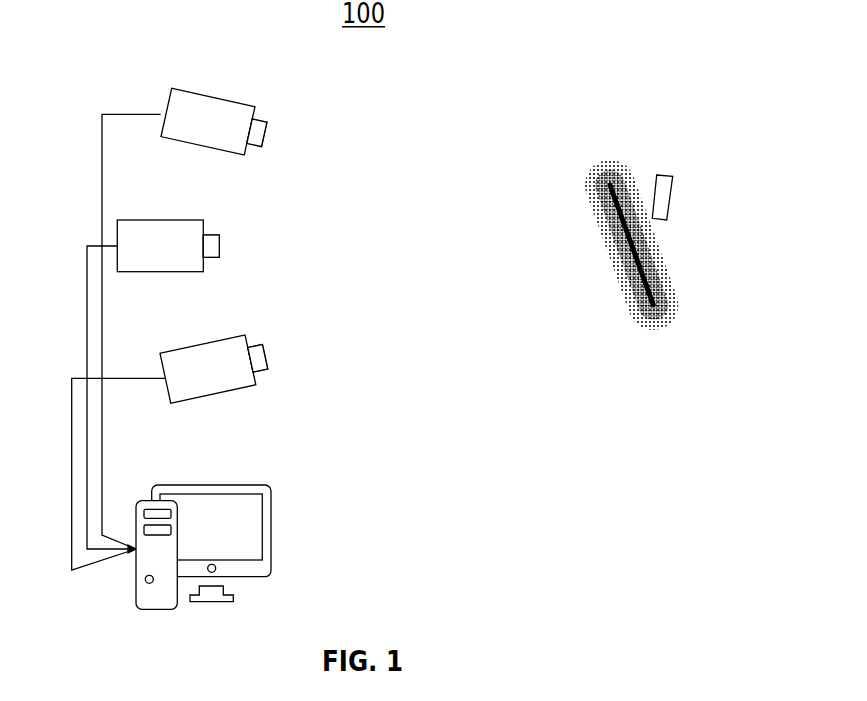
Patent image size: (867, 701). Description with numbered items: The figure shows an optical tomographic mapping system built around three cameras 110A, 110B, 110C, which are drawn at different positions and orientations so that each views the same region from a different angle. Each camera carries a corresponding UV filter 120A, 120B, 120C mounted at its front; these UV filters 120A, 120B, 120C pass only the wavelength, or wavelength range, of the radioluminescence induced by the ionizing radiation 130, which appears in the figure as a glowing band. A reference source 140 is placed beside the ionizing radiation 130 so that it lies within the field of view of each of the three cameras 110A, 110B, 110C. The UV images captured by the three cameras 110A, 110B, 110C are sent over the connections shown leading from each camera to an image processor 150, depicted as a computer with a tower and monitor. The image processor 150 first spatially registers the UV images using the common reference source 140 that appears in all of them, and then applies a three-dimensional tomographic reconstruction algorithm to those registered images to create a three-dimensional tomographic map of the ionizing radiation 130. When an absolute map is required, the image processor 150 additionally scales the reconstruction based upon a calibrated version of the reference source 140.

The camera 110A is at (157, 100).
The camera 110B is at (109, 229).
The camera 110C is at (156, 367).
The UV filter 120A is at (281, 127).
The UV filter 120B is at (238, 250).
The UV filter 120C is at (284, 357).
The ionizing radiation 130 is at (587, 154).
The reference source 140 is at (668, 159).
The image processor 150 is at (283, 588).